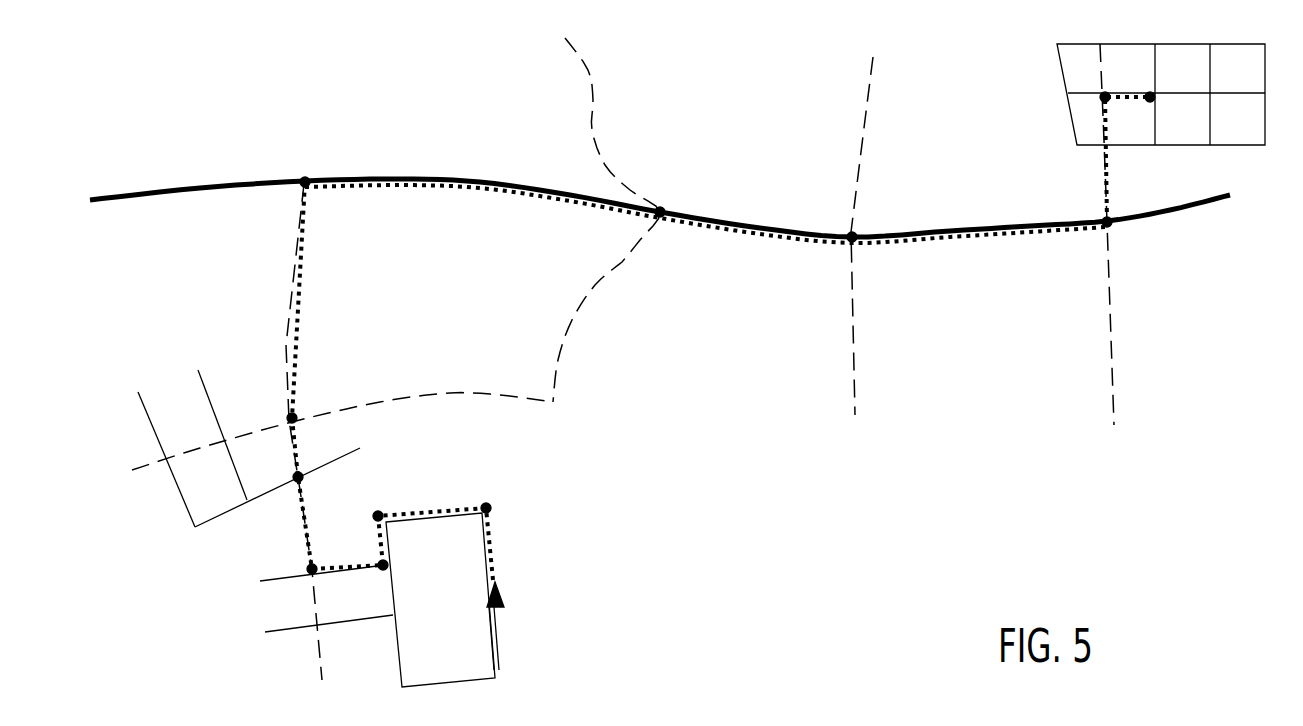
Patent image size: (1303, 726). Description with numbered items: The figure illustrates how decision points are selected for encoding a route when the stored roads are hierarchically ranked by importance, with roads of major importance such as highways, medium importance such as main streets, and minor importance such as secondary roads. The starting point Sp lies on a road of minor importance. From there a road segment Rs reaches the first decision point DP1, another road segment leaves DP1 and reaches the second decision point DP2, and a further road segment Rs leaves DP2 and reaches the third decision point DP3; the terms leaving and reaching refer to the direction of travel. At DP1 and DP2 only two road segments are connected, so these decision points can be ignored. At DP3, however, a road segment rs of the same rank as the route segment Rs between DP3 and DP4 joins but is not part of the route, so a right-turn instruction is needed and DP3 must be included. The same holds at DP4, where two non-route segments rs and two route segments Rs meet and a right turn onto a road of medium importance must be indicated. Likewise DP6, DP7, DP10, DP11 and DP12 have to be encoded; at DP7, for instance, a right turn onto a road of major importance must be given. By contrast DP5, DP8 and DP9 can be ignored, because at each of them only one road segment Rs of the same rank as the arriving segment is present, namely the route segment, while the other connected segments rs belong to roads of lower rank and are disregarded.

The first decision point DP1 is at (486, 507).
The second decision point DP2 is at (378, 515).
The third decision point DP3 is at (383, 566).
The decision point DP4 is at (311, 569).
The decision point DP5 is at (299, 476).
The decision point DP6 is at (293, 417).
The decision point DP7 is at (306, 183).
The decision point DP8 is at (660, 211).
The decision point DP9 is at (853, 235).
The decision point DP10 is at (1108, 224).
The decision point DP11 is at (1104, 95).
The decision point DP12 is at (1151, 99).
The road segment Rs is at (677, 359).
The road segment rs is at (316, 528).
The starting point Sp is at (512, 626).